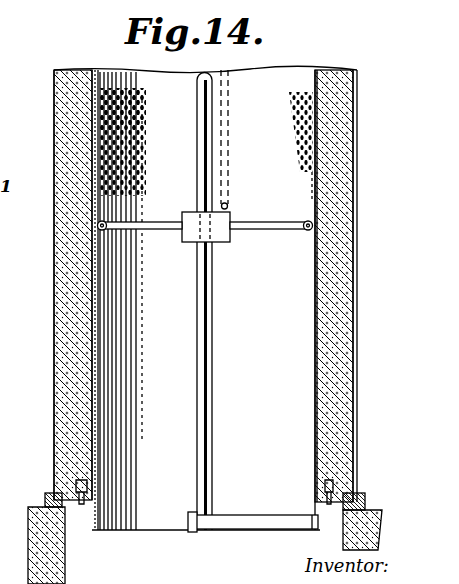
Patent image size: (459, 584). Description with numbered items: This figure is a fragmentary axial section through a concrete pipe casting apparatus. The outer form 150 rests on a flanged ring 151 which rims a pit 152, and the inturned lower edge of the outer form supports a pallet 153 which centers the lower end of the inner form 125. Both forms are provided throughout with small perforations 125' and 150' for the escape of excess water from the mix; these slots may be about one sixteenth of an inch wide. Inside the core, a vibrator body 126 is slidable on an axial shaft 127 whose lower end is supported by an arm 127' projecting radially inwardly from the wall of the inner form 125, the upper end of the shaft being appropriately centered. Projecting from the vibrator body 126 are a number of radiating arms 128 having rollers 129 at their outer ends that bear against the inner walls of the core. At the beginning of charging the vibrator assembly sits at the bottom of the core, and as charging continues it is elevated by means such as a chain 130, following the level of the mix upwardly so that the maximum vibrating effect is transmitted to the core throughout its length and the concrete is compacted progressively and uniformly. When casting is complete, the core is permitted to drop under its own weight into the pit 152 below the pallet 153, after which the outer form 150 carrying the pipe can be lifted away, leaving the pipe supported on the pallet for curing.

The perforations 150' is at (48, 285).
The outer form 150 is at (360, 300).
The inner form 125 is at (207, 301).
The perforations 125' is at (144, 112).
The axial shaft 127 is at (235, 302).
The arm 127' is at (253, 509).
The chain 130 is at (229, 121).
The vibrator body 126 is at (186, 244).
The radiating arms 128 is at (156, 230).
The rollers 129 is at (106, 222).
The pit 152 is at (47, 506).
The pallet 153 is at (64, 550).
The flanged ring 151 is at (362, 502).